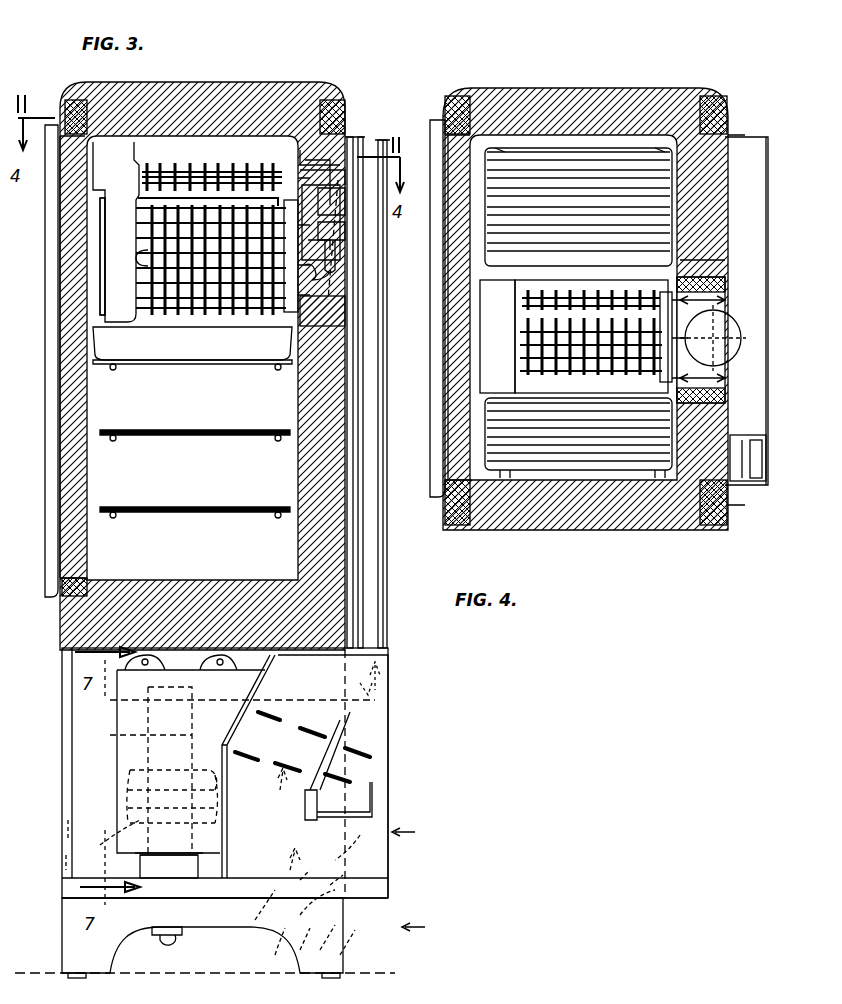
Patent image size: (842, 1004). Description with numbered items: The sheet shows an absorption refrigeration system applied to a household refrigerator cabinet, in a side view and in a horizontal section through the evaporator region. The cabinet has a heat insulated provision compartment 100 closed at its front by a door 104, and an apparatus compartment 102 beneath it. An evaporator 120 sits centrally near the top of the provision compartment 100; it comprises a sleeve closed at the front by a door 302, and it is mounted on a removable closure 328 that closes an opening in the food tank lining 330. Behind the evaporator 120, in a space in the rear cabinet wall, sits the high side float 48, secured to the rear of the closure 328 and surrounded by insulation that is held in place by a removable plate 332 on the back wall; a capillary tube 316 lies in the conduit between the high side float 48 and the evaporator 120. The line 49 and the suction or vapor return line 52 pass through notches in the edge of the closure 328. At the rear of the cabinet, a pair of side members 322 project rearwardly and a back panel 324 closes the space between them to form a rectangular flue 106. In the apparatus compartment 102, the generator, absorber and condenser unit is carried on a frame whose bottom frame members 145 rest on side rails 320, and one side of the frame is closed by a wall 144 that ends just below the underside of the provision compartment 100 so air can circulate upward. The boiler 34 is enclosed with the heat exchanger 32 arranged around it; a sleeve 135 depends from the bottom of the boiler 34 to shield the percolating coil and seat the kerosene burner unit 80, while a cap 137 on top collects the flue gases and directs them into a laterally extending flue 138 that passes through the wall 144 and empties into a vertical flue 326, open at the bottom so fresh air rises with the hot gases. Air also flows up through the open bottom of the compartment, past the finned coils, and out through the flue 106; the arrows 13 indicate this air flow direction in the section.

In FIG. 4, the air flow arrows 13 is at (721, 341).
In FIG. 3, the heat exchanger 32 is at (128, 810).
In FIG. 3, the boiler 34 is at (112, 735).
In FIG. 3, the high side float 48 is at (345, 180).
In FIG. 4, the high side float 48 is at (725, 340).
In FIG. 3, the line 49 is at (358, 574).
In FIG. 3, the suction or vapor return line 52 is at (350, 542).
In FIG. 3, the kerosene burner unit 80 is at (175, 945).
In FIG. 3, the provision compartment 100 is at (226, 481).
In FIG. 3, the apparatus compartment 102 is at (80, 776).
In FIG. 3, the door 104 is at (50, 404).
In FIG. 4, the door 104 is at (500, 340).
In FIG. 4, the flue 106 is at (745, 237).
In FIG. 3, the evaporator 120 is at (225, 195).
In FIG. 4, the evaporator 120 is at (520, 365).
In FIG. 3, the sleeve 135 is at (110, 850).
In FIG. 3, the cap 137 is at (224, 700).
In FIG. 3, the laterally extending flue 138 is at (232, 712).
In FIG. 3, the wall 144 is at (255, 668).
In FIG. 3, the bottom frame members 145 is at (388, 872).
In FIG. 3, the door 302 is at (100, 272).
In FIG. 3, the capillary tube 316 is at (320, 279).
In FIG. 3, the side rails 320 is at (240, 895).
In FIG. 4, the side members 322 is at (742, 135).
In FIG. 4, the back panel 324 is at (770, 475).
In FIG. 3, the vertical flue 326 is at (375, 620).
In FIG. 4, the vertical flue 326 is at (750, 435).
In FIG. 3, the removable closure 328 is at (300, 160).
In FIG. 3, the food tank lining 330 is at (295, 395).
In FIG. 4, the removable plate 332 is at (728, 280).